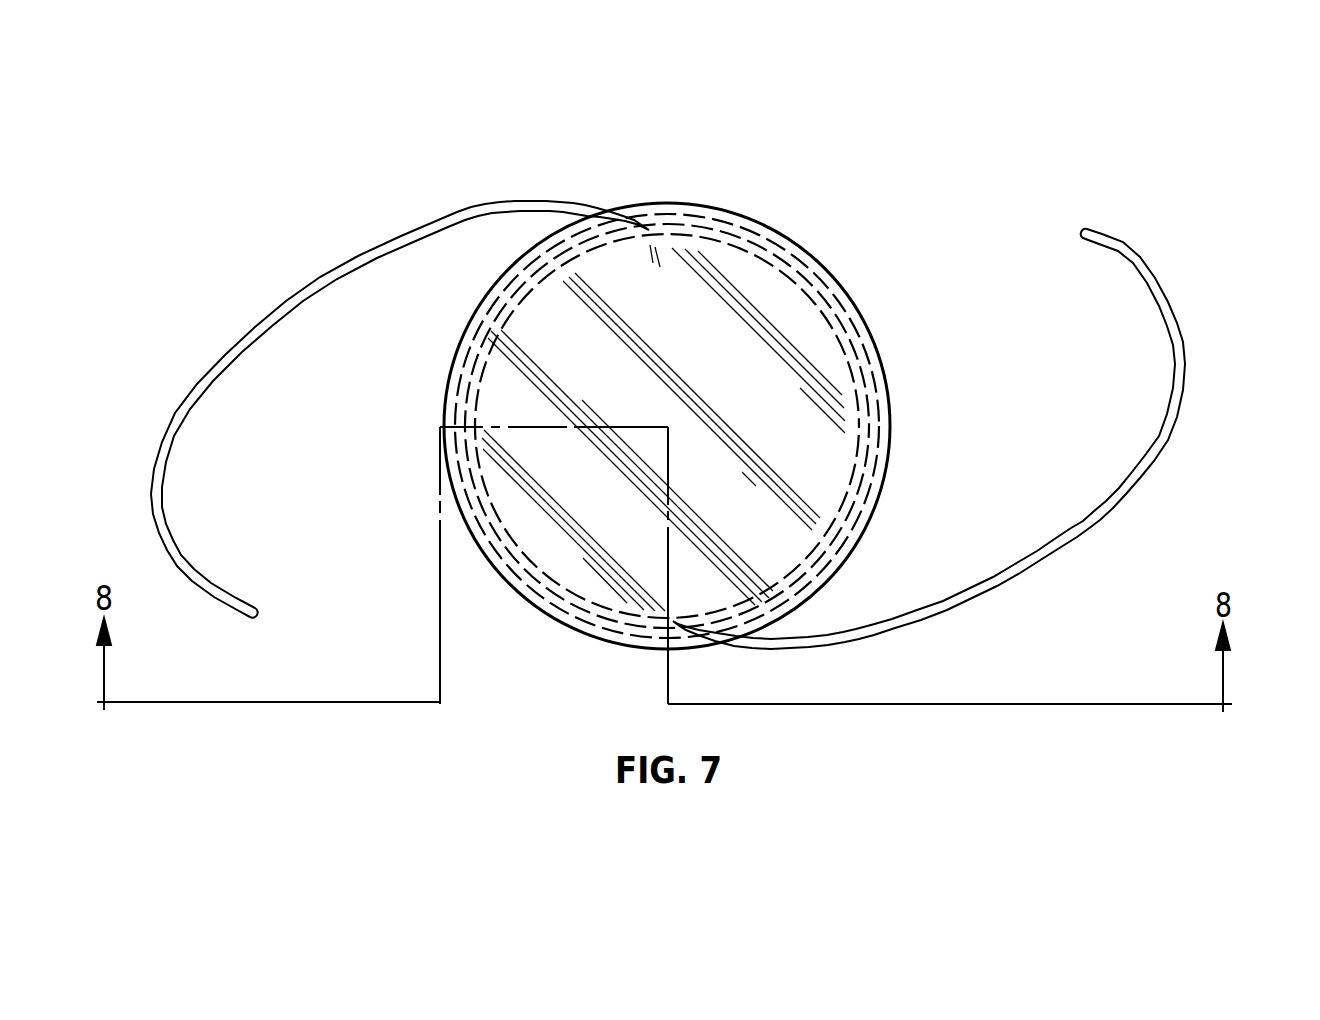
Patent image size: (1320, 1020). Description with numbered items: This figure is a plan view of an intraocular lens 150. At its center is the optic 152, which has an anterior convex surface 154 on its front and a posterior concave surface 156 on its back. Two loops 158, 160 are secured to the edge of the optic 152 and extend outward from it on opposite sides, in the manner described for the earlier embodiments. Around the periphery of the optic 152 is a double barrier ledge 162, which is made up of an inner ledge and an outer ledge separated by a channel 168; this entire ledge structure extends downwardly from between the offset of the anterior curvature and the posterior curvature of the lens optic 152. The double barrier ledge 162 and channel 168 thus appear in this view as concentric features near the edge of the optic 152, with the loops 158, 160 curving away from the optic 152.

The intraocular lens 150 is at (1158, 160).
The optic 152 is at (853, 297).
The anterior convex surface 154 is at (835, 363).
The posterior concave surface 156 is at (808, 422).
The loop 158 is at (201, 577).
The loop 160 is at (1116, 255).
The double barrier ledge 162 is at (873, 448).
The channel 168 is at (862, 495).